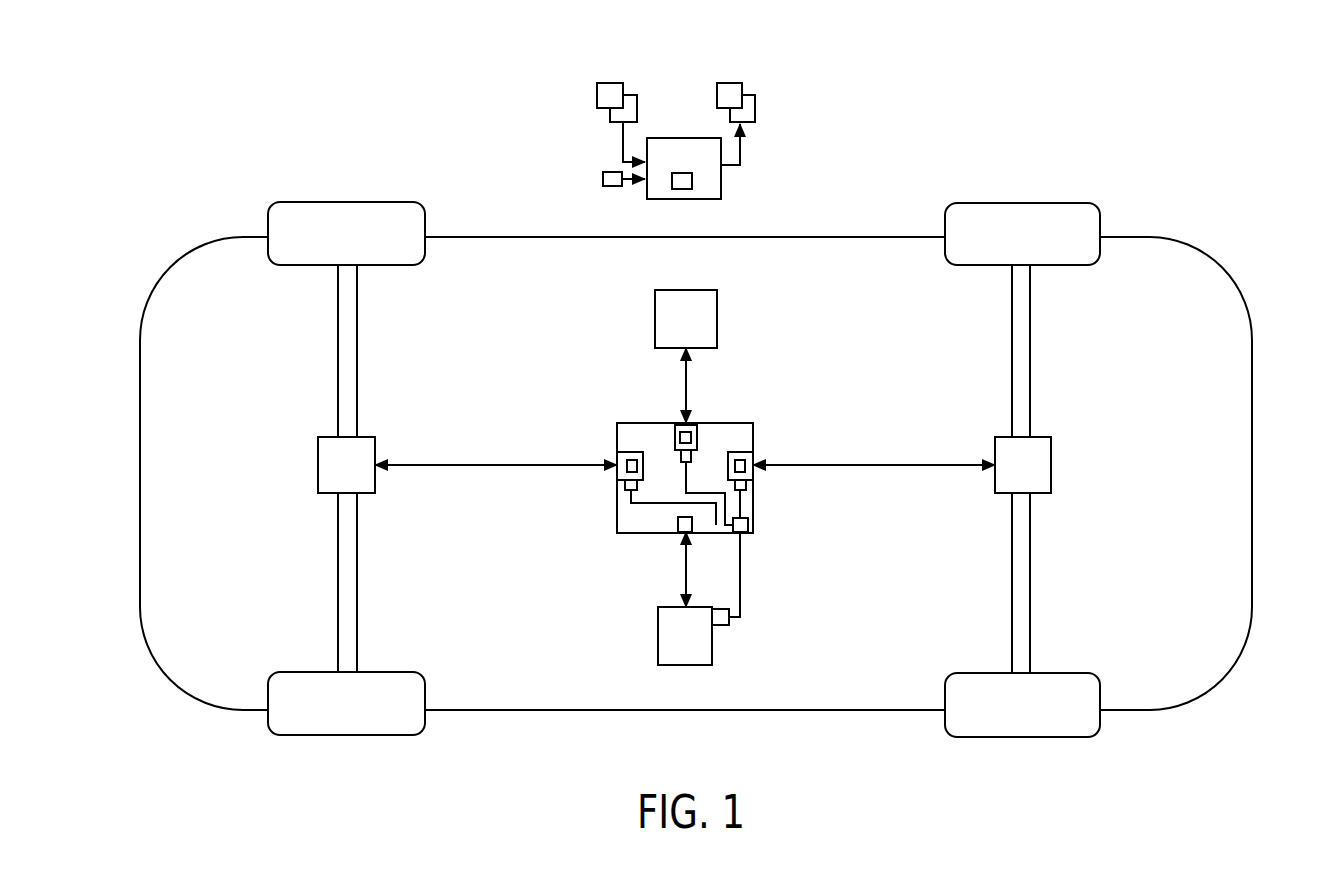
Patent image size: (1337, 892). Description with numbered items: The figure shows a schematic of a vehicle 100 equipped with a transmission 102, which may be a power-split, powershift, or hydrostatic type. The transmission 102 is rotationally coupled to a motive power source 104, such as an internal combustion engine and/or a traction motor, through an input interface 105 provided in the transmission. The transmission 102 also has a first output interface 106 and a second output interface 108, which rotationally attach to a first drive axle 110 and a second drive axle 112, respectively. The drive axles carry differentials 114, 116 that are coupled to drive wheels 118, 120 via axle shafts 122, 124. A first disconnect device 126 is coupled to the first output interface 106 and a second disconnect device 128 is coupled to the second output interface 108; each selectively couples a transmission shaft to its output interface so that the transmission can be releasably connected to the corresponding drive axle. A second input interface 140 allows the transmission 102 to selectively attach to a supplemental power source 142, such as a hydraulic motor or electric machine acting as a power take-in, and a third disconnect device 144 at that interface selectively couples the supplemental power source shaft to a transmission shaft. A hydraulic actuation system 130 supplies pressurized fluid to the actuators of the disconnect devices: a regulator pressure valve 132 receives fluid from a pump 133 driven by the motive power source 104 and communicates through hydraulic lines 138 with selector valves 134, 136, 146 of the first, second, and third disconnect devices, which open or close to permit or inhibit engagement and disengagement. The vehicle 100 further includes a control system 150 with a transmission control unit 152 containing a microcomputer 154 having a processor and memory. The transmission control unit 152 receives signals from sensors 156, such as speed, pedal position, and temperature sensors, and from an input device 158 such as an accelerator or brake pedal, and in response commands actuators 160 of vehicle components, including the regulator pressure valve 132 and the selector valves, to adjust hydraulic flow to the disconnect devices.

The vehicle 100 is at (1277, 242).
The transmission 102 is at (552, 387).
The motive power source 104 is at (686, 665).
The input interface 105 is at (679, 526).
The first output interface 106 is at (628, 452).
The second output interface 108 is at (745, 452).
The first drive axle 110 is at (285, 431).
The second drive axle 112 is at (1081, 436).
The first differential 114 is at (318, 465).
The second differential 116 is at (1051, 466).
The first drive wheels 118 is at (346, 468).
The second drive wheels 120 is at (1022, 470).
The first axle shafts 122 is at (338, 353).
The second axle shafts 124 is at (1012, 348).
The first disconnect device 126 is at (627, 462).
The second disconnect device 128 is at (753, 462).
The hydraulic actuation system 130 is at (586, 573).
The regulator pressure valve 132 is at (748, 528).
The pump 133 is at (723, 625).
The first selector valve 134 is at (625, 485).
The second selector valve 136 is at (746, 485).
The hydraulic lines 138 is at (705, 493).
The second input interface 140 is at (675, 437).
The supplemental power source 142 is at (717, 318).
The third disconnect device 144 is at (697, 433).
The third selector valve 146 is at (683, 462).
The control system 150 is at (774, 90).
The transmission control unit 152 is at (684, 168).
The microcomputer 154 is at (692, 181).
The sensors 156 is at (577, 83).
The input device 158 is at (603, 179).
The actuators 160 is at (693, 83).